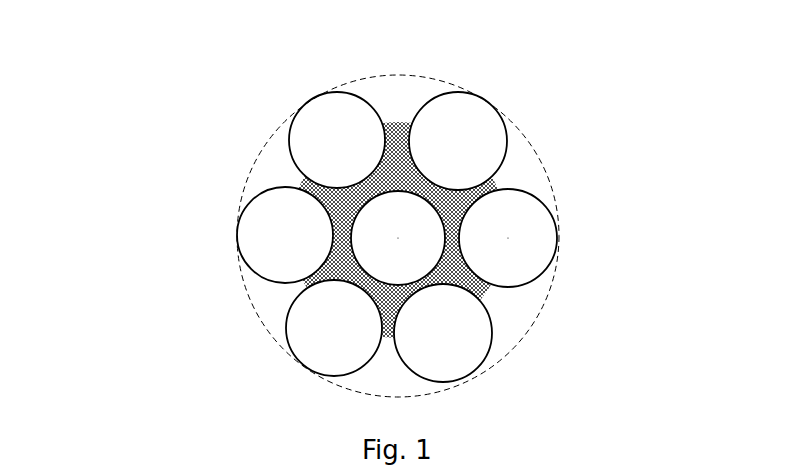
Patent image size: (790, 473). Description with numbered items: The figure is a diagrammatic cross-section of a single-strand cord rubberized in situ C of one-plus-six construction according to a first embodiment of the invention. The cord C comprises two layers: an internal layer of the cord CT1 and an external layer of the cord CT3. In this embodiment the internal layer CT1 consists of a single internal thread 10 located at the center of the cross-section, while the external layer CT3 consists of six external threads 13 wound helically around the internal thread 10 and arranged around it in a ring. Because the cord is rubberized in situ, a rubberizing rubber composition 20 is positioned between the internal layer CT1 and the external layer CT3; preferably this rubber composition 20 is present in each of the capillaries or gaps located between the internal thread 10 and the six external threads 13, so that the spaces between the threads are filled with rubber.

The single-strand cord rubberized in situ C is at (241, 91).
The internal thread 10 is at (393, 257).
The external threads 13 is at (347, 342).
The rubber composition 20 is at (343, 205).
The internal layer of the cord CT1 is at (416, 232).
The external layer of the cord CT3 is at (516, 244).